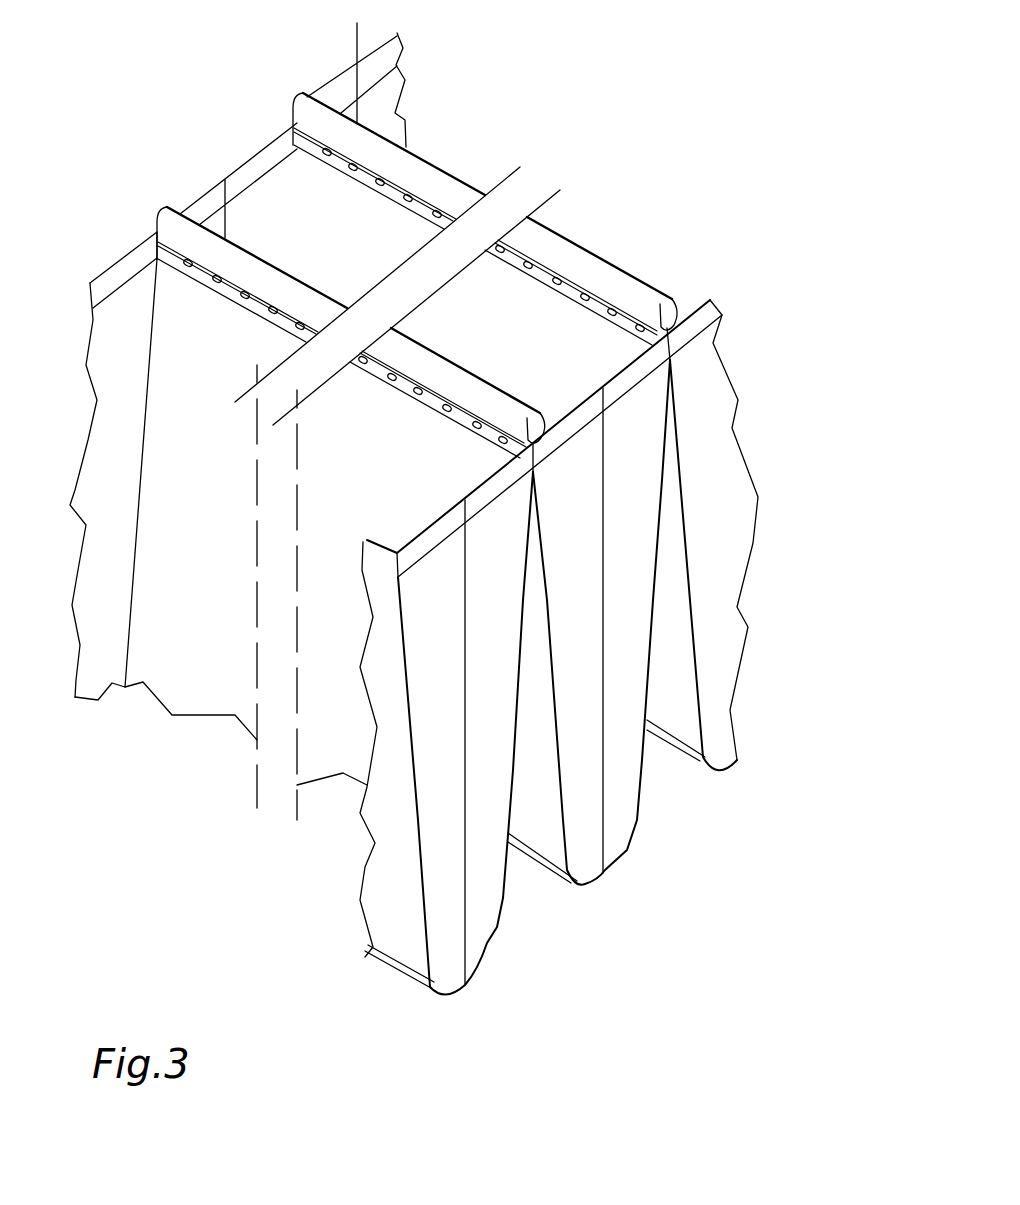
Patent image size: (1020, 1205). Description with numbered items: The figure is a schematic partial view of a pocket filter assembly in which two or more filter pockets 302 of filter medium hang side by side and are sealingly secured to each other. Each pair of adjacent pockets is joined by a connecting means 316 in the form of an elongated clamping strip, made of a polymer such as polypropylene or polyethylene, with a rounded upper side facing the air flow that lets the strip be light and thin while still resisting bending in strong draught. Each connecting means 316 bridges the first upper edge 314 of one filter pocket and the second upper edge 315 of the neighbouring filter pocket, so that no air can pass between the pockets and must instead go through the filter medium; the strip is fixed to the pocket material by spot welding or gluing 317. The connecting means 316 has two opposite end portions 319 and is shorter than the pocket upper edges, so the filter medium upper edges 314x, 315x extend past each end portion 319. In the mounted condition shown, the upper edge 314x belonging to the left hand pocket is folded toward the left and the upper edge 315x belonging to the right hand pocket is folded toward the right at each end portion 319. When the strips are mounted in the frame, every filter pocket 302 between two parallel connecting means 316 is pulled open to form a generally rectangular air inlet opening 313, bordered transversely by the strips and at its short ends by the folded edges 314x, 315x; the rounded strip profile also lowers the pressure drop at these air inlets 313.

The filter pocket 302 is at (492, 928).
The air inlet opening 313 is at (378, 212).
The first upper edge 314 is at (188, 315).
The filter medium upper edge 314x is at (255, 149).
The second upper edge 315 is at (402, 923).
The filter medium upper edge 315x is at (203, 192).
The connecting means 316 is at (517, 325).
The spot welding or gluing 317 is at (613, 316).
The end portion 319 is at (304, 93).